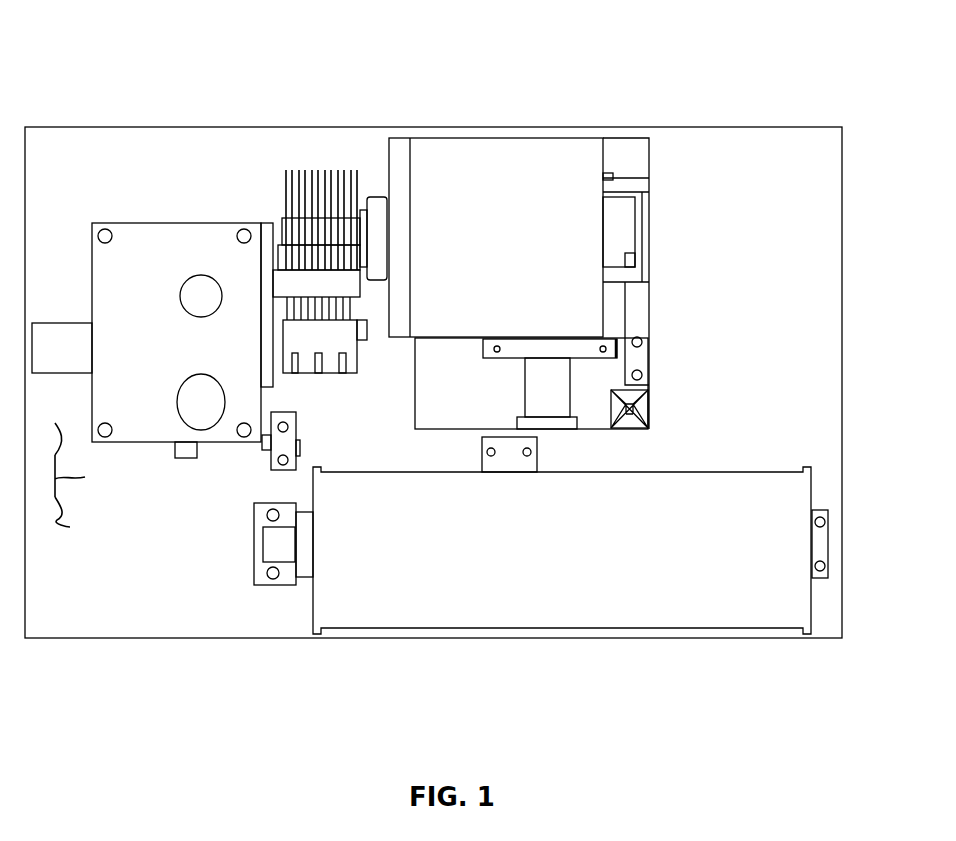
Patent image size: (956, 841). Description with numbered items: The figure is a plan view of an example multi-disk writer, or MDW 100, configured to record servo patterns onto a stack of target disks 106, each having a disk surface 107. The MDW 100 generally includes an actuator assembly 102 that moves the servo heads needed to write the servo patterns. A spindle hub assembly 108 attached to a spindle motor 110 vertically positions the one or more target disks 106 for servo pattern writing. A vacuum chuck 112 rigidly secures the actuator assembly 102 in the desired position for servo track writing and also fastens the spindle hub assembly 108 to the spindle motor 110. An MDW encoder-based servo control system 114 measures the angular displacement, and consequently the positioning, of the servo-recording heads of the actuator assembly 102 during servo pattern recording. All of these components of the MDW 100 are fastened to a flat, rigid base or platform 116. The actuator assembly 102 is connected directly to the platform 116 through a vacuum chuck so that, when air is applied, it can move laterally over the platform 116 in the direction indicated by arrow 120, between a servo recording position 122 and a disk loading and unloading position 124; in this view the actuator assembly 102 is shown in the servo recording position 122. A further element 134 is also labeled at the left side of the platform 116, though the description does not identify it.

The multi-disk writer 100 is at (155, 118).
The actuator assembly 102 is at (160, 240).
The target disks 106 is at (285, 170).
The disk surface 107 is at (285, 182).
The spindle hub assembly 108 is at (377, 150).
The spindle motor 110 is at (554, 156).
The vacuum chuck 112 is at (440, 615).
The MDW encoder-based servo control system 114 is at (270, 459).
The platform 116 is at (433, 127).
The arrow 120 is at (90, 482).
The servo recording position 122 is at (57, 425).
The disk loading and unloading position 124 is at (85, 521).
The connector 134 is at (62, 325).